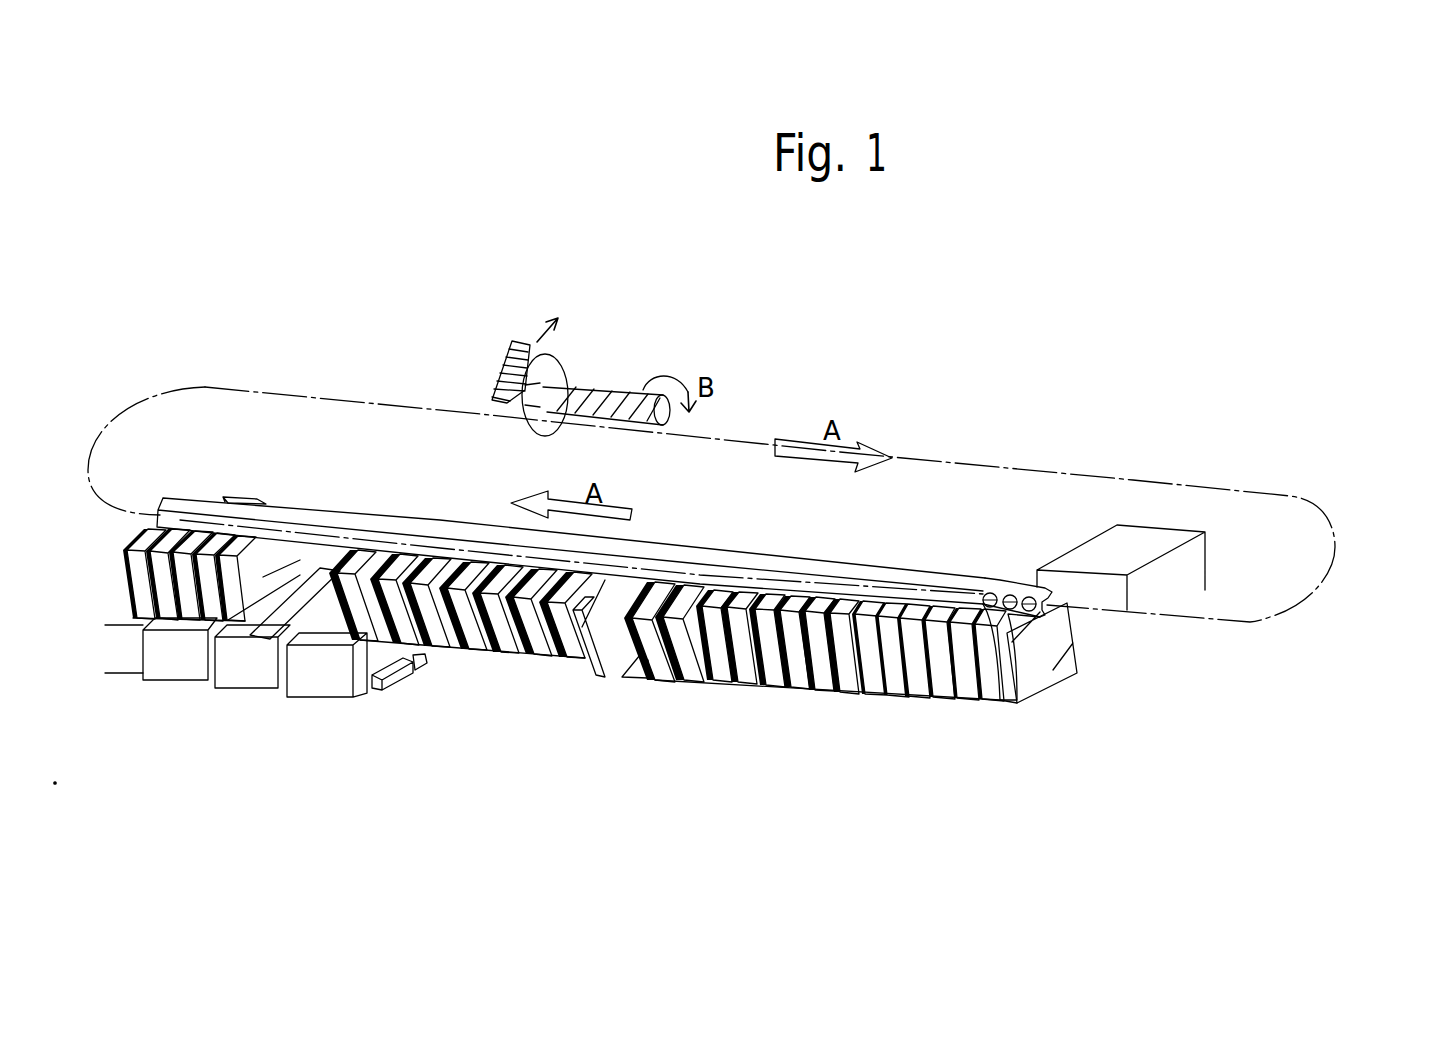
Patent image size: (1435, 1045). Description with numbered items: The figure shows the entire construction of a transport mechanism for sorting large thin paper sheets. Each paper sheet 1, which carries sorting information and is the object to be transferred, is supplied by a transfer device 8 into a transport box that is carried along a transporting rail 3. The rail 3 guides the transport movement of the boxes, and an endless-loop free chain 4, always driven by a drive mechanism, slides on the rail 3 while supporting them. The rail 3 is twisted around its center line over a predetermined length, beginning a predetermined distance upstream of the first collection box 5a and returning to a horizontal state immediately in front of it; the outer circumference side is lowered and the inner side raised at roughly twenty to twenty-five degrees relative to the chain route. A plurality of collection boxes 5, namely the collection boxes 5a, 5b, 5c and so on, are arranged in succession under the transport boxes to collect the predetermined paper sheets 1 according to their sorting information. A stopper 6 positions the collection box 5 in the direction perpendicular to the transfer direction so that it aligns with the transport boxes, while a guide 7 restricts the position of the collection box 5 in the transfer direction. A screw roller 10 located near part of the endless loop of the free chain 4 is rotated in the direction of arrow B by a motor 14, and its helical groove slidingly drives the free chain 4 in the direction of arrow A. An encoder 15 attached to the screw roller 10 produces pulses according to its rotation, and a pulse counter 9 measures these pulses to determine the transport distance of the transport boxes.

The paper sheet 1 is at (1035, 683).
The transporting rail 3 is at (702, 545).
The free chain 4 is at (227, 389).
The collection box 5 is at (360, 722).
The first collection box 5a is at (327, 665).
The collection box 5b is at (252, 656).
The collection box 5c is at (180, 649).
The stopper 6 is at (427, 662).
The guide 7 is at (398, 684).
The transfer device 8 is at (1159, 527).
The pulse counter 9 is at (246, 497).
The screw roller 10 is at (594, 397).
The motor 14 is at (540, 332).
The encoder 15 is at (565, 358).